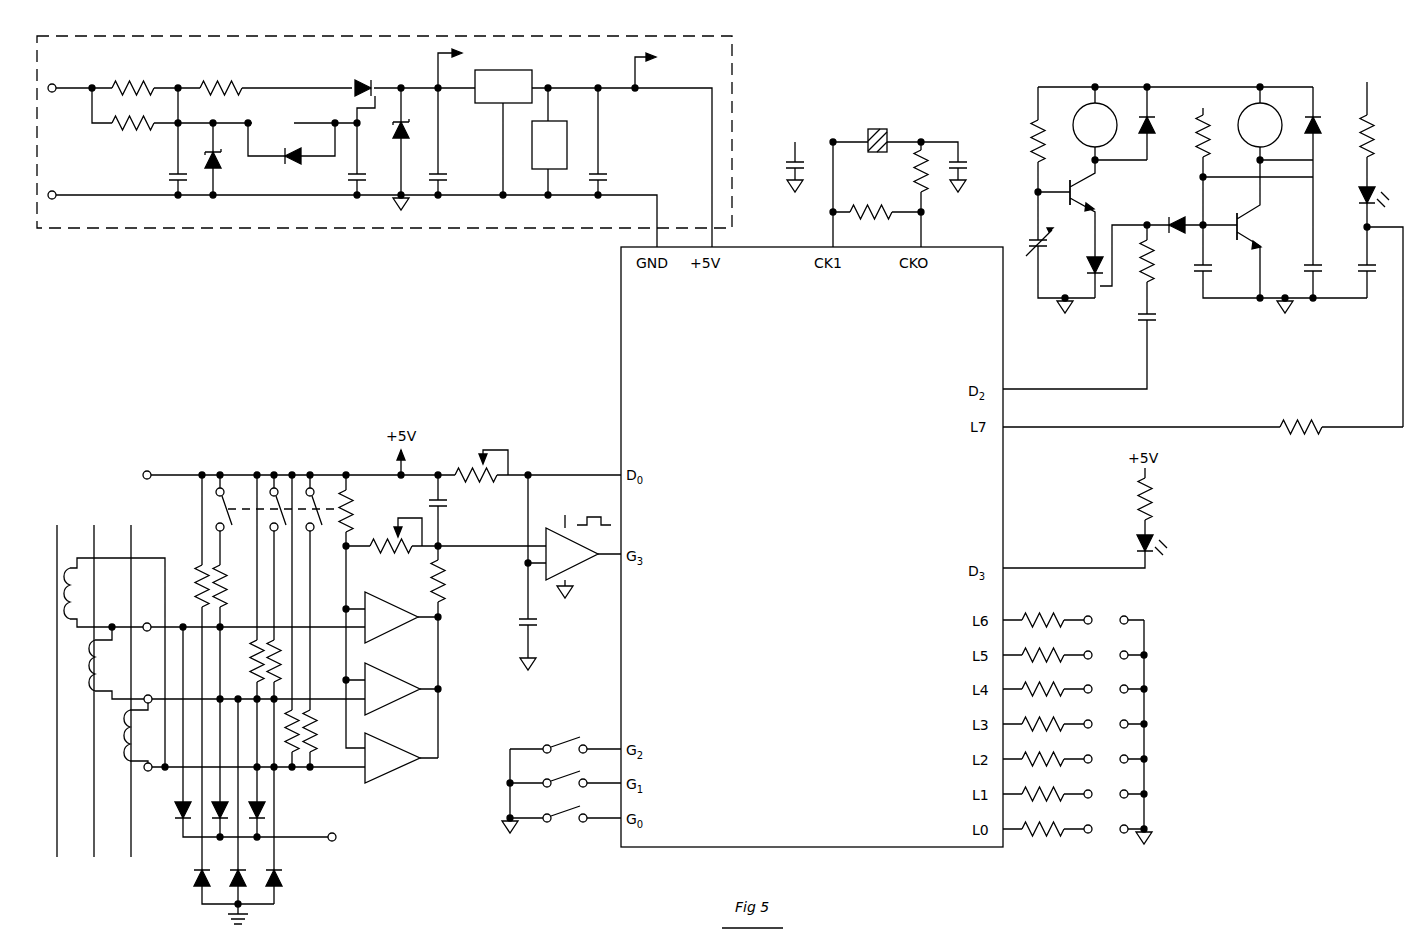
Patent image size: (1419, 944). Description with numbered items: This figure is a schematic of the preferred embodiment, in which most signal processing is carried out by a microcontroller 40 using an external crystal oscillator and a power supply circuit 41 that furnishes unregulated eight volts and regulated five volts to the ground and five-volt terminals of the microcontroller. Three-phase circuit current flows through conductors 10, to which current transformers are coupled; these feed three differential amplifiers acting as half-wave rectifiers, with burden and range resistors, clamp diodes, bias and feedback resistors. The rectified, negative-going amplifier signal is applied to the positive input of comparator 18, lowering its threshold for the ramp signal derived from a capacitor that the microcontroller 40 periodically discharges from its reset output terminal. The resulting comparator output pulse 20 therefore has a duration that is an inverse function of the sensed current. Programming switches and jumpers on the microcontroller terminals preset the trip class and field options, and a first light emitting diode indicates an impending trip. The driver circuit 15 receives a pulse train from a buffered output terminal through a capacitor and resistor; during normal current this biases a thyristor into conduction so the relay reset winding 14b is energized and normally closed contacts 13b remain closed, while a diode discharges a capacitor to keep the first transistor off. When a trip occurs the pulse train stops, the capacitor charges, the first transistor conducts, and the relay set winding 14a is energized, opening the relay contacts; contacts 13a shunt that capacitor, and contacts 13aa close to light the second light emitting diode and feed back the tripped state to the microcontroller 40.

The conductors 10 is at (210, 710).
The driver circuit 15 is at (1183, 239).
The comparator 18 is at (590, 571).
The comparator output pulse 20 is at (606, 505).
The microcontroller 40 is at (797, 802).
The power supply circuit 41 is at (406, 141).
The normally-open contacts 13a is at (1301, 263).
The normally-open contacts 13aa is at (1351, 263).
The normally closed contacts 13b is at (1054, 243).
The relay set winding 14a is at (1277, 120).
The relay reset winding 14b is at (1112, 120).